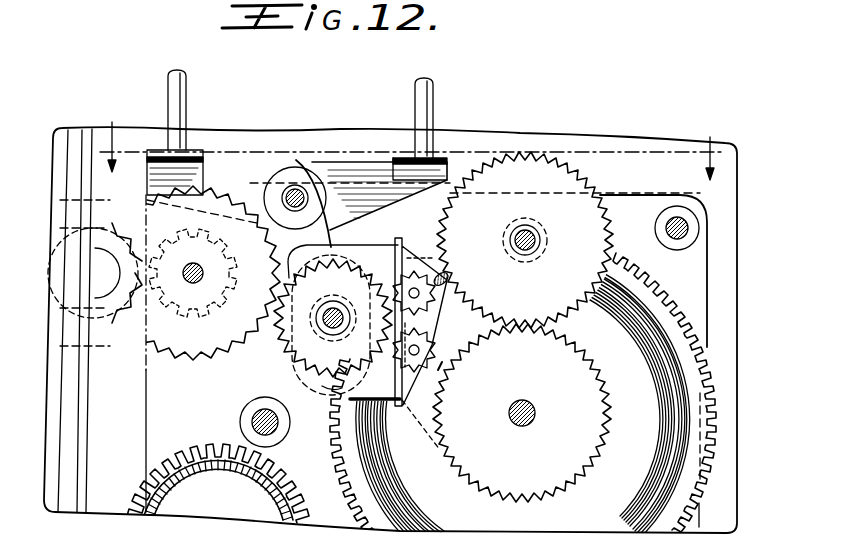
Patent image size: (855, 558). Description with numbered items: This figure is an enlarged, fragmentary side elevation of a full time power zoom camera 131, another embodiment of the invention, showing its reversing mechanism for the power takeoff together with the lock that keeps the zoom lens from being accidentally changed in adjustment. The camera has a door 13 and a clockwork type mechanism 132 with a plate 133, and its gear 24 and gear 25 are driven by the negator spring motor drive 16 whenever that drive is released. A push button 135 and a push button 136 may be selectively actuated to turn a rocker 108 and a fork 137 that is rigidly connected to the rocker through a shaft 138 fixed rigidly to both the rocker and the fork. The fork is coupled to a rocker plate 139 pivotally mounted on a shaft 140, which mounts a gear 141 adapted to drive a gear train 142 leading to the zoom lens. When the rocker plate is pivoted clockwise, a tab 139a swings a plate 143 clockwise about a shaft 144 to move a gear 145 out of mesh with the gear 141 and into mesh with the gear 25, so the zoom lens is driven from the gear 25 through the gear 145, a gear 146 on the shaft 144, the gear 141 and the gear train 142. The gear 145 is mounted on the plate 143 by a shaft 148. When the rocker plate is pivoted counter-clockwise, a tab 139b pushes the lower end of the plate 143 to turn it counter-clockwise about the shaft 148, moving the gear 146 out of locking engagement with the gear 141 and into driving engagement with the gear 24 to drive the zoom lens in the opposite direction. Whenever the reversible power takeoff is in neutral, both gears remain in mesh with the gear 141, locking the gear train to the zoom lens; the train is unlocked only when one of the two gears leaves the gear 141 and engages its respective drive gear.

The door 13 is at (406, 138).
The negator spring motor drive 16 is at (672, 392).
The gear 24 is at (578, 400).
The gear 25 is at (572, 290).
The rocker 108 is at (355, 150).
The full time power zoom camera 131 is at (776, 133).
The clockwork type mechanism 132 is at (722, 332).
The plate 133 is at (690, 264).
The push button 135 is at (186, 97).
The push button 136 is at (433, 102).
The fork 137 is at (290, 242).
The shaft 138 is at (295, 185).
The rocker plate 139 is at (350, 398).
The tab 139a is at (362, 252).
The tab 139b is at (397, 424).
The shaft 140 is at (318, 386).
The gear 141 is at (324, 332).
The gear train 142 is at (178, 366).
The plate 143 is at (418, 250).
The shaft 144 is at (424, 350).
The gear 145 is at (450, 283).
The gear 146 is at (440, 368).
The shaft 148 is at (440, 282).